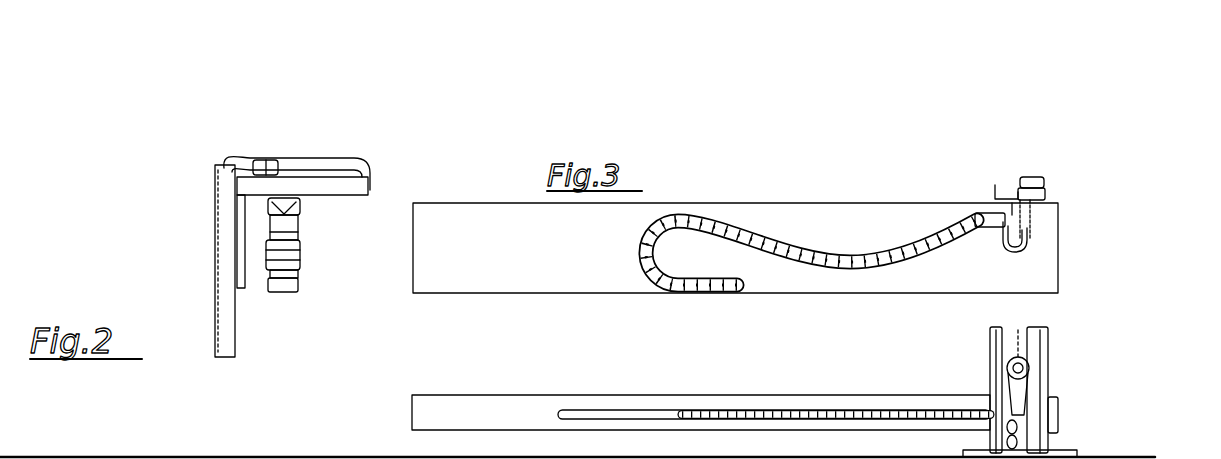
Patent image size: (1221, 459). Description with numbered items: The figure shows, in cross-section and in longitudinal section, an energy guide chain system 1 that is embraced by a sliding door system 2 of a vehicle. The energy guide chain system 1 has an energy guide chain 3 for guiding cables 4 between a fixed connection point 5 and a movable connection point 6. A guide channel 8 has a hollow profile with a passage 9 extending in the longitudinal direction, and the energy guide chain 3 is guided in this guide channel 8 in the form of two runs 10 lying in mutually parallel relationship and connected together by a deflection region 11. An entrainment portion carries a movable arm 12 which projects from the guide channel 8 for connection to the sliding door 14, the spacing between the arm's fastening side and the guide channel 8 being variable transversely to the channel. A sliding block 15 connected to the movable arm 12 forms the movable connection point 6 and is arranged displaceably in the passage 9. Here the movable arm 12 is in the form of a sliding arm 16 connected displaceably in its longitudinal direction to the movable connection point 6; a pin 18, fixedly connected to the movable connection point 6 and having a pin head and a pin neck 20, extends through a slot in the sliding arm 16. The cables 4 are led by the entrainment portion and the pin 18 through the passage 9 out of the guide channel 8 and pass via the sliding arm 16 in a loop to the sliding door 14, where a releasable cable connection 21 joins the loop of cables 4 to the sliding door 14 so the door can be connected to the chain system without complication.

In FIG. 3, the energy guide chain system 1 is at (1080, 113).
In FIG. 3, the sliding door system 2 is at (1099, 56).
In FIG. 2, the energy guide chain 3 is at (300, 245).
In FIG. 2, the cables 4 is at (308, 158).
In FIG. 3, the cables 4 is at (1030, 246).
In FIG. 3, the fixed connection point 5 is at (743, 292).
In FIG. 3, the movable connection point 6 is at (1001, 234).
In FIG. 2, the guide channel 8 is at (300, 280).
In FIG. 3, the passage 9 is at (714, 407).
In FIG. 3, the runs 10 is at (793, 252).
In FIG. 3, the deflection region 11 is at (643, 245).
In FIG. 2, the movable arm 12 is at (335, 183).
In FIG. 3, the movable arm 12 is at (1052, 330).
In FIG. 2, the sliding door 14 is at (222, 252).
In FIG. 3, the sliding block 15 is at (1031, 210).
In FIG. 3, the sliding arm 16 is at (1046, 194).
In FIG. 3, the pin 18 is at (1008, 182).
In FIG. 3, the pin neck 20 is at (1012, 178).
In FIG. 2, the releasable cable connection 21 is at (262, 160).